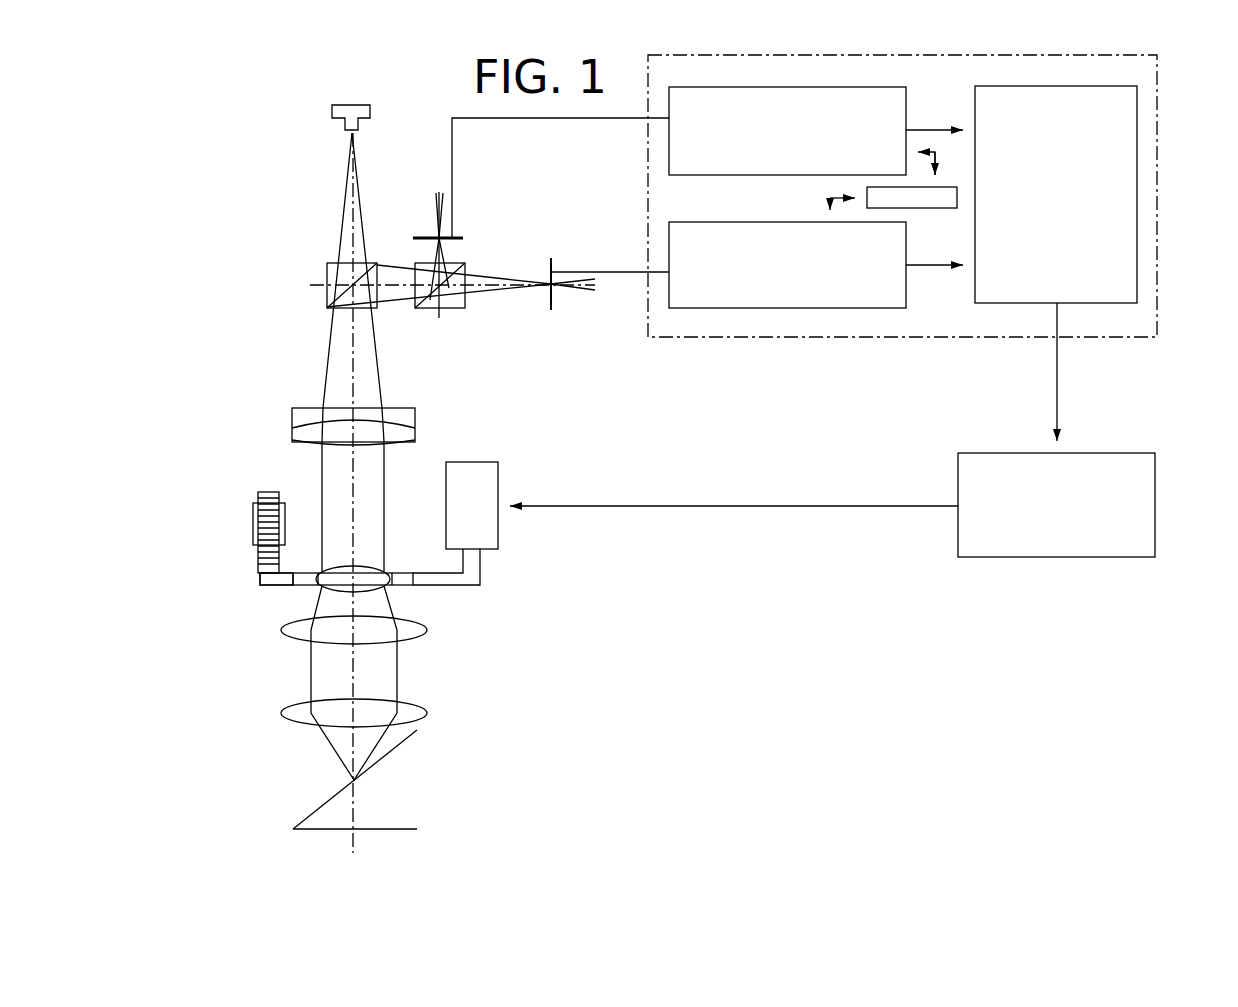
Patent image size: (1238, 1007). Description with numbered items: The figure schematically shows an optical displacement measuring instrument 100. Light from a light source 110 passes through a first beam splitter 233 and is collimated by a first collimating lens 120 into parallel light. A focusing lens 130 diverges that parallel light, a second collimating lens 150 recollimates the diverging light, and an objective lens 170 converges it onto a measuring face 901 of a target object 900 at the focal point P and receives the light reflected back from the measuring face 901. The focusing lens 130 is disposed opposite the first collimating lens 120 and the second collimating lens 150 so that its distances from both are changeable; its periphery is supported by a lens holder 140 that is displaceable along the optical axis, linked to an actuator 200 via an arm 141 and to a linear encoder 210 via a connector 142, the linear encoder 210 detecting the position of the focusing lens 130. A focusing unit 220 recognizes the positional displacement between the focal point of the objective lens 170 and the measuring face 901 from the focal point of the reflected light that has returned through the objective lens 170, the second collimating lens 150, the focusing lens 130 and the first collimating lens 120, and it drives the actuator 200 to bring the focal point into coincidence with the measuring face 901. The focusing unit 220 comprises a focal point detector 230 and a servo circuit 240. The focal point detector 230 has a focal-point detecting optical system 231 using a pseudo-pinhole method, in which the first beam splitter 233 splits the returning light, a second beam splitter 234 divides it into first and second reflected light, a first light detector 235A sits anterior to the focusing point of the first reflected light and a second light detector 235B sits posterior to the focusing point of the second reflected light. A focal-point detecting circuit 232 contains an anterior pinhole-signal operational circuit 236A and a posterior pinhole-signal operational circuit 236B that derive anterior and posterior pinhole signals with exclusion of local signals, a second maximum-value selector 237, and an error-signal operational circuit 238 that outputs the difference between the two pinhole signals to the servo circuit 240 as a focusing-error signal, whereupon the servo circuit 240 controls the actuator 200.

The optical displacement measuring instrument 100 is at (163, 136).
The light source 110 is at (333, 110).
The first collimating lens 120 is at (305, 410).
The focusing lens 130 is at (322, 573).
The lens holder 140 is at (397, 588).
The arm 141 is at (466, 585).
The connector 142 is at (270, 587).
The second collimating lens 150 is at (282, 628).
The objective lens 170 is at (418, 722).
The actuator 200 is at (475, 462).
The linear encoder 210 is at (258, 560).
The focusing unit 220 is at (785, 578).
The focal point detector 230 is at (753, 378).
The focal-point detecting optical system 231 is at (518, 362).
The focal-point detecting circuit 232 is at (1157, 93).
The first beam splitter 233 is at (378, 306).
The second beam splitter 234 is at (457, 308).
The first light detector 235A is at (467, 240).
The second light detector 235B is at (551, 310).
The anterior pinhole-signal operational circuit 236A is at (783, 86).
The posterior pinhole-signal operational circuit 236B is at (785, 308).
The second maximum-value selector 237 is at (867, 190).
The error-signal operational circuit 238 is at (1060, 86).
The servo circuit 240 is at (1155, 528).
The target object 900 is at (373, 810).
The measuring face 901 is at (327, 800).
The focal point P is at (361, 784).